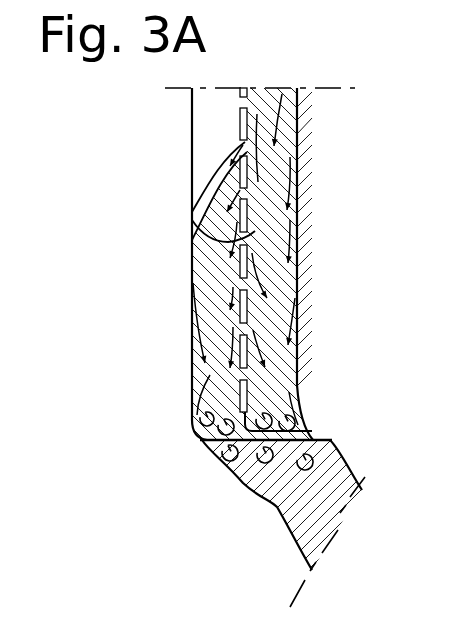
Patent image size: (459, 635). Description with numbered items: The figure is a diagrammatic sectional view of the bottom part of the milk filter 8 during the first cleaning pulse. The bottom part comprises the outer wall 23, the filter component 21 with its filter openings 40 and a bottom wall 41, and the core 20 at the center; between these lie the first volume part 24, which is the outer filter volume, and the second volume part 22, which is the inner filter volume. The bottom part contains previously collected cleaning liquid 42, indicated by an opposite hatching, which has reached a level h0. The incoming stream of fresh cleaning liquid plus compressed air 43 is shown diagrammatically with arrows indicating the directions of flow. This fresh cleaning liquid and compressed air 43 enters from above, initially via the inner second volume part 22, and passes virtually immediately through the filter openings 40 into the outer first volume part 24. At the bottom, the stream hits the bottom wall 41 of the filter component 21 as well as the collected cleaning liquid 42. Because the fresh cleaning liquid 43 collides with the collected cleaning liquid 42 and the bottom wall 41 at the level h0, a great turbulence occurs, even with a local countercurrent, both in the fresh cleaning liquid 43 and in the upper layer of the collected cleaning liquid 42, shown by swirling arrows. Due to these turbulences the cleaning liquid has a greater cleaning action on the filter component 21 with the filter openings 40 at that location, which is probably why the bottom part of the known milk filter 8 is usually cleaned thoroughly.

The milk filter 8 is at (170, 293).
The core 20 is at (362, 293).
The filter component 21 is at (243, 110).
The second volume part 22 is at (292, 211).
The outer wall 23 is at (193, 137).
The first volume part 24 is at (220, 137).
The filter openings 40 is at (192, 220).
The bottom wall 41 is at (325, 440).
The cleaning liquid 42 is at (297, 504).
The incoming stream of cleaning liquid plus compressed air 43 is at (280, 353).
The level h0 is at (200, 438).